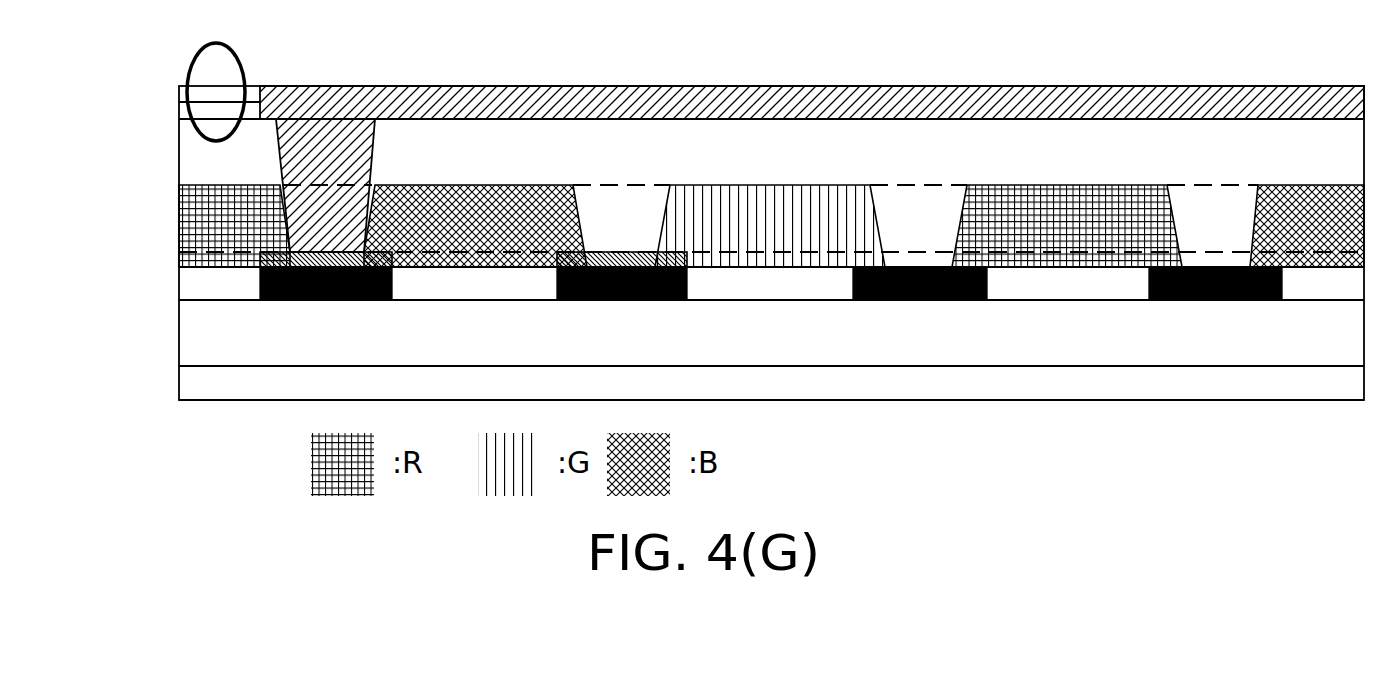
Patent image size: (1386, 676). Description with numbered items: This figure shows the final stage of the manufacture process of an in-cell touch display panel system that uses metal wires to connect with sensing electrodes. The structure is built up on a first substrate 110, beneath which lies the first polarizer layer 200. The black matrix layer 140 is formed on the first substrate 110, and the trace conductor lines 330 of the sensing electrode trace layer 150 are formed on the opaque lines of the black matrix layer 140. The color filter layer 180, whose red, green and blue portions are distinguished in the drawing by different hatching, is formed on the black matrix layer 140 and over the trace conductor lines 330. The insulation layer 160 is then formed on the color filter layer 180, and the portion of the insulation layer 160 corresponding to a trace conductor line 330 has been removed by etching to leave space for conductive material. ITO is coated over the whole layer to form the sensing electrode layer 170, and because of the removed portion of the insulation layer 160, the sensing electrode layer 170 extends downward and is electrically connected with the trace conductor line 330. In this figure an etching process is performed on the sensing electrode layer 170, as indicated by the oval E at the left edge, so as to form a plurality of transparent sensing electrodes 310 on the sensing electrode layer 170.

The oval E is at (187, 77).
The first substrate 110 is at (195, 340).
The black matrix layer 140 is at (200, 291).
The sensing electrode trace layer 150 is at (200, 255).
The insulation layer 160 is at (245, 155).
The sensing electrode layer 170 is at (253, 101).
The color filter layer 180 is at (237, 223).
The first polarizer layer 200 is at (195, 383).
The transparent sensing electrodes 310 is at (497, 87).
The trace conductor lines 330 is at (347, 252).